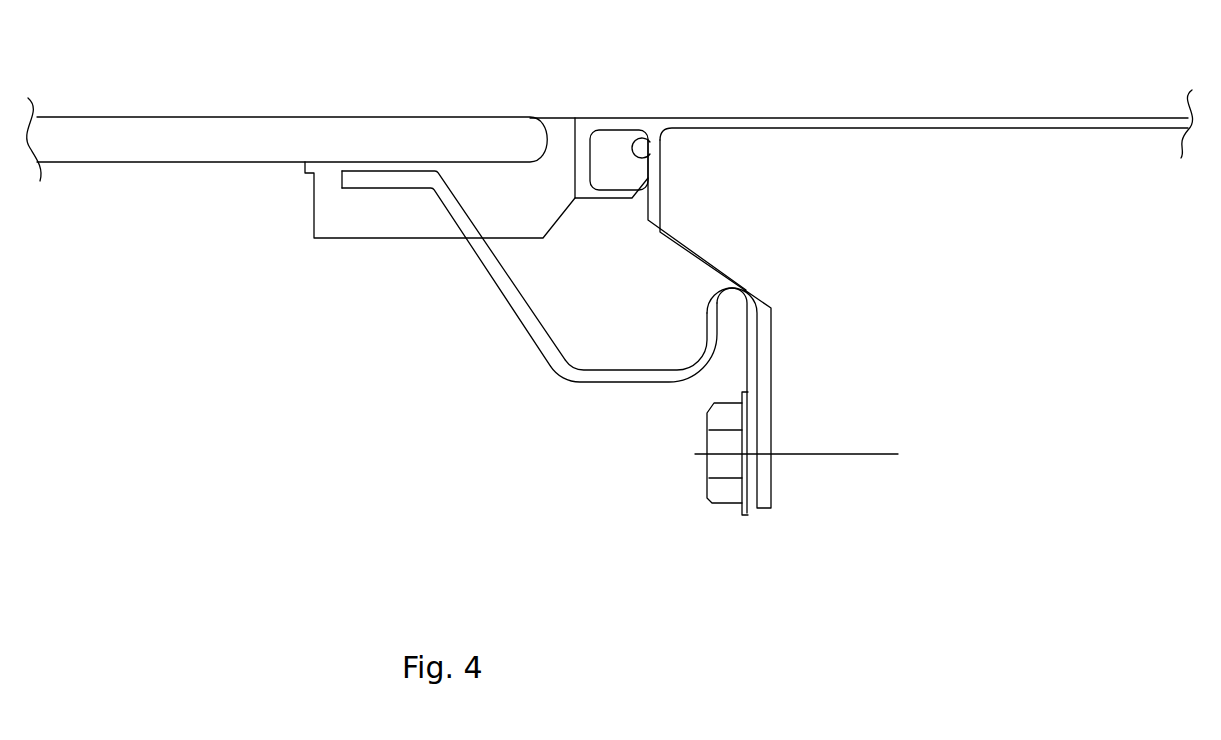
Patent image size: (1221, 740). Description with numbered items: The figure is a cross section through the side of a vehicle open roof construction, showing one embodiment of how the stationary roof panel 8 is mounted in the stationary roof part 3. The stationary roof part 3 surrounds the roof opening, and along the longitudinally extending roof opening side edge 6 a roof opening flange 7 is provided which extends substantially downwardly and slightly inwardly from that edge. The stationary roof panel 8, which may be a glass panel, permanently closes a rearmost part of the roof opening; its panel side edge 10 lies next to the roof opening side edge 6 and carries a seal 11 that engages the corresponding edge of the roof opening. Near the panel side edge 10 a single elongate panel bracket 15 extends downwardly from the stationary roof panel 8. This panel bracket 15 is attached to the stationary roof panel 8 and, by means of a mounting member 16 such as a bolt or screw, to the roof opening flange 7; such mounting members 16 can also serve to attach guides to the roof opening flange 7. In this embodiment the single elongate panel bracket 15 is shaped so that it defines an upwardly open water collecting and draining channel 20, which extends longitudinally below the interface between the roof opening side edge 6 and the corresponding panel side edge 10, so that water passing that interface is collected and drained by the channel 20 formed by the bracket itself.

The stationary roof part 3 is at (838, 128).
The roof opening side edge 6 is at (637, 137).
The roof opening flange 7 is at (759, 293).
The stationary roof panel 8 is at (278, 128).
The panel side edge 10 is at (577, 142).
The seal 11 is at (618, 128).
The panel bracket 15 is at (495, 284).
The mounting member 16 is at (710, 470).
The water collecting and draining channel 20 is at (613, 370).